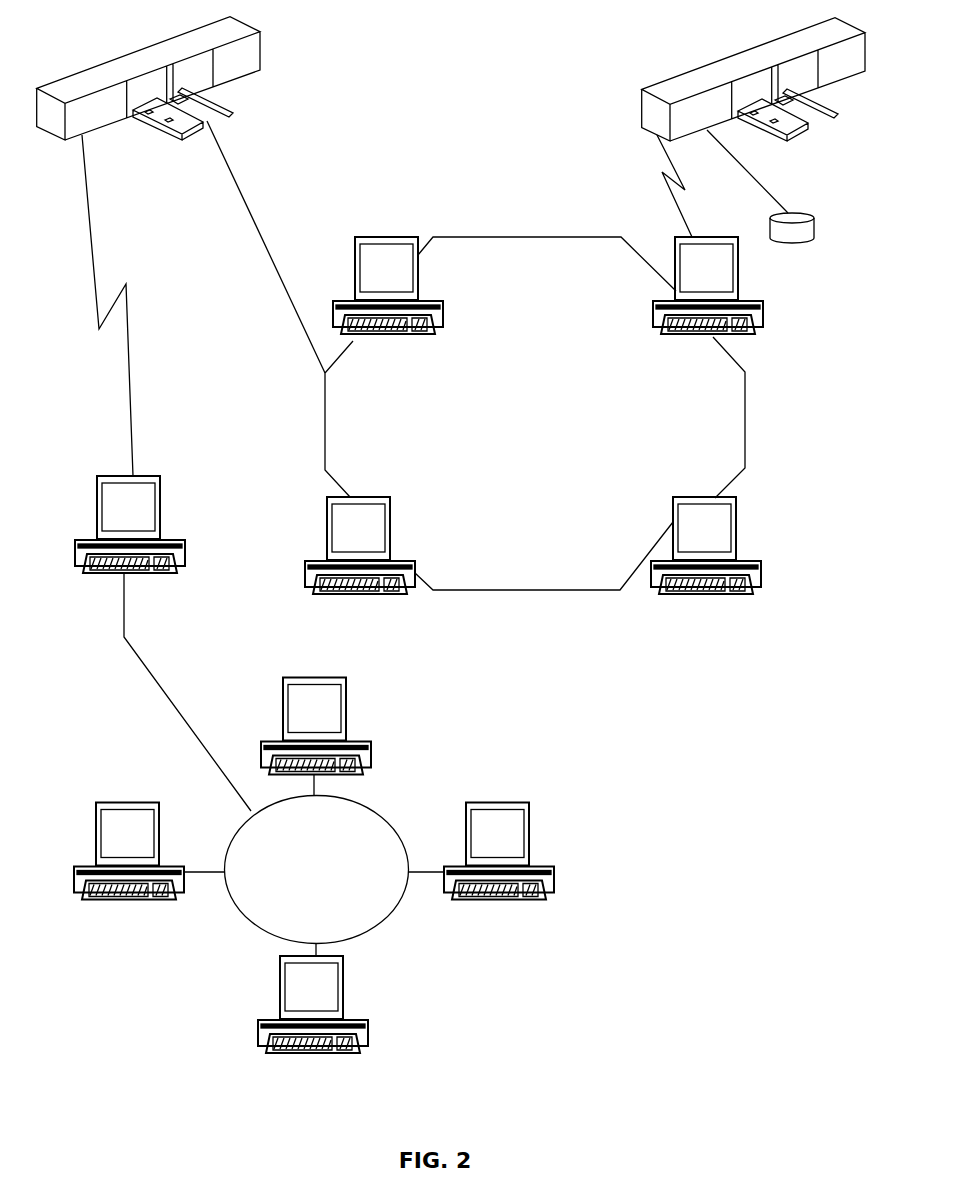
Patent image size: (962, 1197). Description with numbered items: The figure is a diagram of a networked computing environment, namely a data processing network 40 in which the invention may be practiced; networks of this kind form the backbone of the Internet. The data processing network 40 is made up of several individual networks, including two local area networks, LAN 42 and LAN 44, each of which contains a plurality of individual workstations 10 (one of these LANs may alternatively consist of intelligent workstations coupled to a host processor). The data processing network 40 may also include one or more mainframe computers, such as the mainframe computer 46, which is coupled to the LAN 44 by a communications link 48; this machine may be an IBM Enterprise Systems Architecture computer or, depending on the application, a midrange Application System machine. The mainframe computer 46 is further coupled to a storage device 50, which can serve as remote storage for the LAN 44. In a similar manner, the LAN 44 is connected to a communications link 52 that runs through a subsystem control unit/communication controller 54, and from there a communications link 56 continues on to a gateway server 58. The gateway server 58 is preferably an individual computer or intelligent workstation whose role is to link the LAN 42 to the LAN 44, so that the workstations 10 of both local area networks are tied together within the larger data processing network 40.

The workstation 10 is at (282, 988).
The data processing network 40 is at (537, 233).
The LAN 42 is at (314, 865).
The LAN 44 is at (535, 413).
The mainframe computer 46 is at (697, 67).
The communications link 48 is at (667, 192).
The storage device 50 is at (807, 212).
The communications link 52 is at (258, 190).
The subsystem control unit/communication controller 54 is at (95, 65).
The communications link 56 is at (95, 300).
The gateway server 58 is at (97, 510).